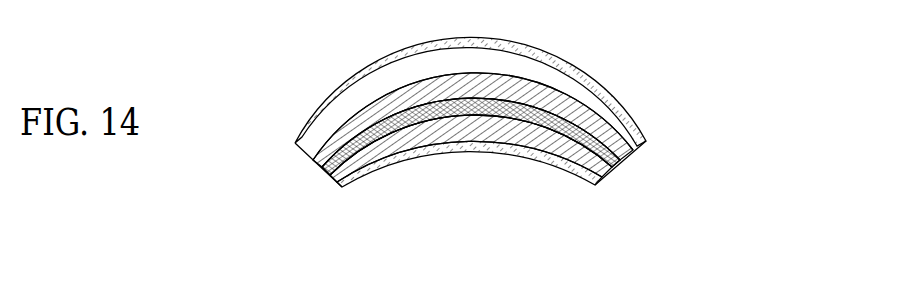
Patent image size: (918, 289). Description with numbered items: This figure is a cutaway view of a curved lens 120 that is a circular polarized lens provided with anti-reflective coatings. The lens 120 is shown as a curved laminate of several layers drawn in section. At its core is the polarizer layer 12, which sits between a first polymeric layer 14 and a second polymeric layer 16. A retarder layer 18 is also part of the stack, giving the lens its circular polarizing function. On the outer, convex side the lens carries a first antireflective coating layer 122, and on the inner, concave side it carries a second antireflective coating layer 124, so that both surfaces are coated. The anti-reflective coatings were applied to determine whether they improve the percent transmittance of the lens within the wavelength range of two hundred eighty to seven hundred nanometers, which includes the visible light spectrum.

The lens 120 is at (559, 147).
The first antireflective coating layer 122 is at (625, 112).
The retarder layer 18 is at (635, 148).
The second polymeric layer 16 is at (316, 164).
The polarizer layer 12 is at (326, 173).
The first polymeric layer 14 is at (331, 178).
The second antireflective coating layer 124 is at (595, 186).